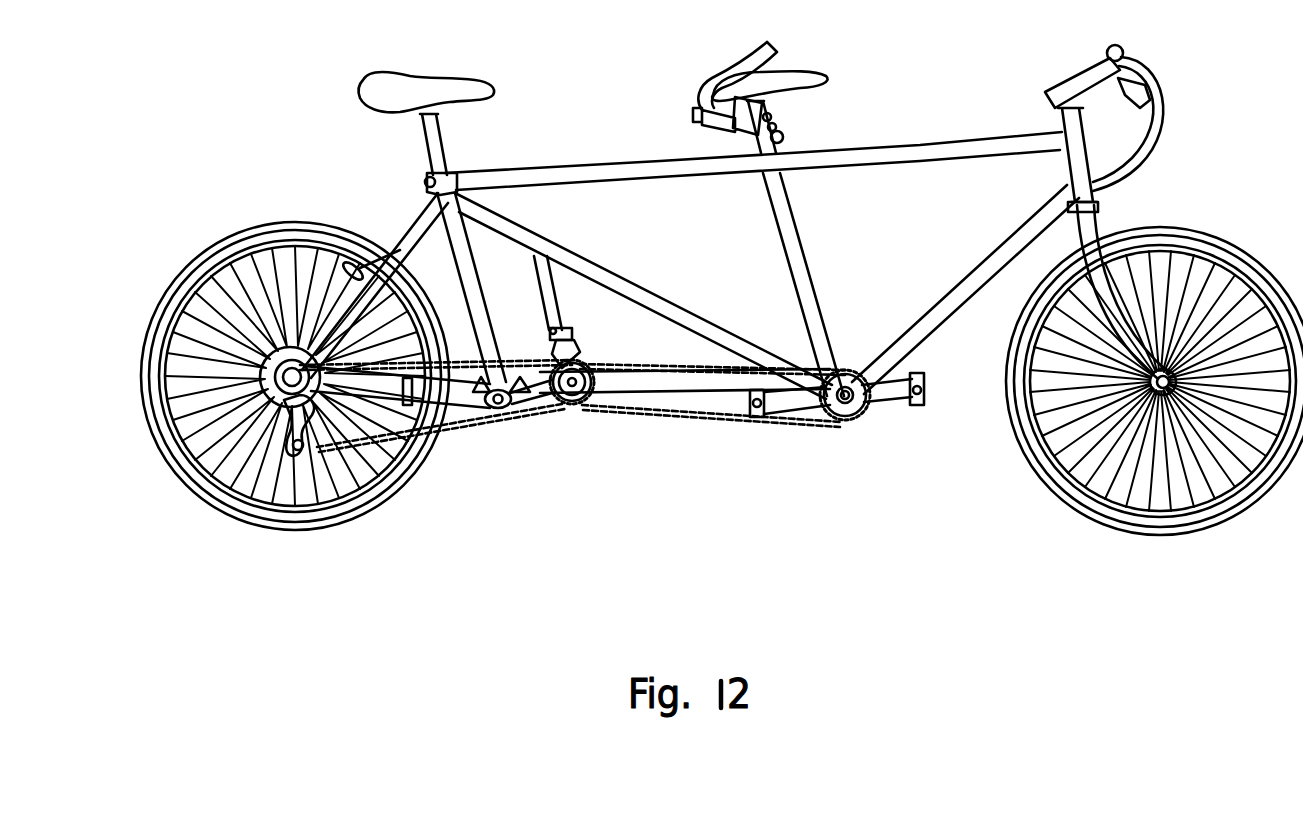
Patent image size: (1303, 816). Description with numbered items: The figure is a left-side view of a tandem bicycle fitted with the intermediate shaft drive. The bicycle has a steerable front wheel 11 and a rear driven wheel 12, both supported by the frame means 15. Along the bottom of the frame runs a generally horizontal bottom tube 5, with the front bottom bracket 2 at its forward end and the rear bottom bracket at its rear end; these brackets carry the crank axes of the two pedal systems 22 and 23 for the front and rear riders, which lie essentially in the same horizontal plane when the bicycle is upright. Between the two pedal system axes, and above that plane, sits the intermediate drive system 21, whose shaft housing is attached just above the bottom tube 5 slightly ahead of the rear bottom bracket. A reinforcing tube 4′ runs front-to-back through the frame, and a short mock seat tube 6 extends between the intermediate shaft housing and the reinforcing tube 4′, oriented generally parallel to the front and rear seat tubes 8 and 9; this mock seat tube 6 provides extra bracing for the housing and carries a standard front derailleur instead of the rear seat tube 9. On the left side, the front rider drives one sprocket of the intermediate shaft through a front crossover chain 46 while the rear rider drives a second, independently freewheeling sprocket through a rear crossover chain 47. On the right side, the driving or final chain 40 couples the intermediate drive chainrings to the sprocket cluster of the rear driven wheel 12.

The front bottom bracket 2 is at (897, 452).
The reinforcing tube 4′ is at (702, 250).
The bottom tube 5 is at (627, 400).
The mock seat tube 6 is at (557, 307).
The front seat tube 8 is at (807, 287).
The rear seat tube 9 is at (478, 275).
The steerable front wheel 11 is at (1012, 357).
The rear driven wheel 12 is at (382, 497).
The frame means 15 is at (605, 265).
The intermediate drive system 21 is at (645, 331).
The pedal system 22 is at (800, 400).
The pedal system 23 is at (488, 428).
The chain 40 is at (455, 400).
The front crossover chain 46 is at (693, 413).
The rear crossover chain 47 is at (540, 420).